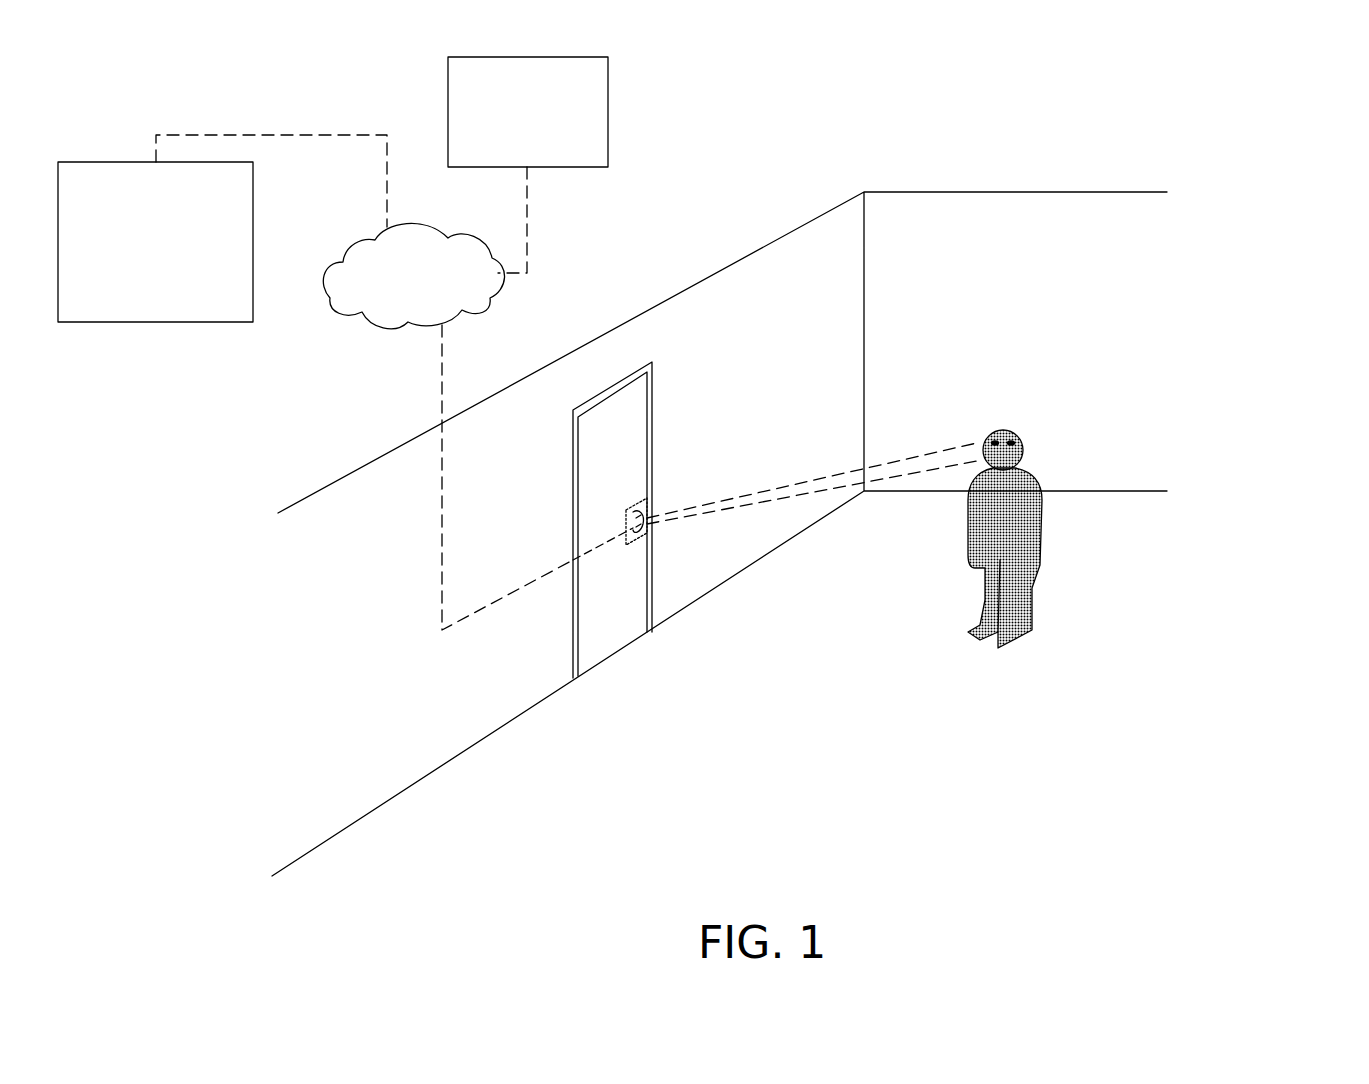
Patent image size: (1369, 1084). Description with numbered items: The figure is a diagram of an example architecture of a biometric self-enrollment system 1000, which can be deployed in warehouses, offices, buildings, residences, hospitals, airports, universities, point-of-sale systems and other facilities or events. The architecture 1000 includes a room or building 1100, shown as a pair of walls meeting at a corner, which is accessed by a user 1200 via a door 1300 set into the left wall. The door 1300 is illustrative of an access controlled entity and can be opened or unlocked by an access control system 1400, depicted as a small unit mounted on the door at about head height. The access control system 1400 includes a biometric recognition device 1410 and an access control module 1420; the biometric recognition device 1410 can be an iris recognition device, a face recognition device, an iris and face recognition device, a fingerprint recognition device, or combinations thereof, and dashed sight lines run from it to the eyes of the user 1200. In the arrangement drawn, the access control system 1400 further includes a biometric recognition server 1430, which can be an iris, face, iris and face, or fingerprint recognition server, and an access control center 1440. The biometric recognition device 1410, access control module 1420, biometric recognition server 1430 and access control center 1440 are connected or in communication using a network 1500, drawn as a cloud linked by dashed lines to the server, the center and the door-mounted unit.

The biometric self-enrollment system 1000 is at (1173, 102).
The room or building 1100 is at (394, 338).
The user 1200 is at (1041, 539).
The door 1300 is at (612, 520).
The access control system 1400 is at (618, 547).
The biometric recognition device 1410 is at (633, 506).
The access control module 1420 is at (644, 529).
The biometric recognition server 1430 is at (155, 242).
The access control center 1440 is at (528, 112).
The network 1500 is at (413, 289).